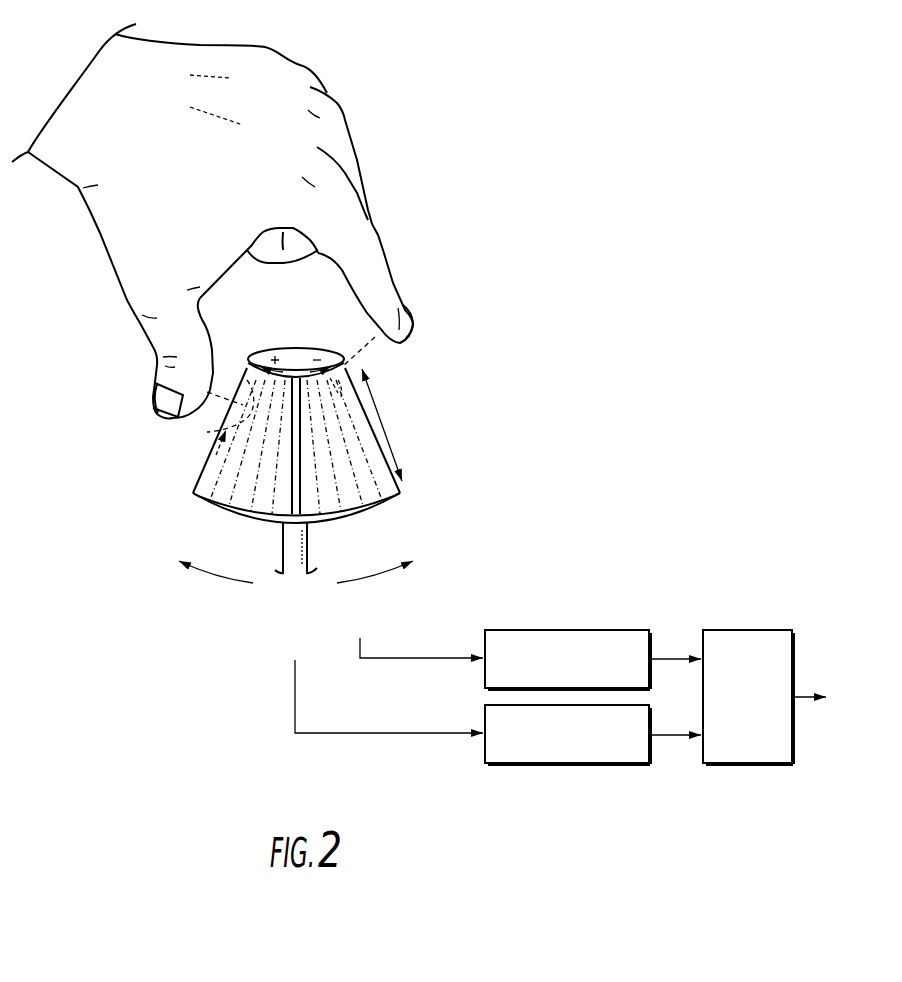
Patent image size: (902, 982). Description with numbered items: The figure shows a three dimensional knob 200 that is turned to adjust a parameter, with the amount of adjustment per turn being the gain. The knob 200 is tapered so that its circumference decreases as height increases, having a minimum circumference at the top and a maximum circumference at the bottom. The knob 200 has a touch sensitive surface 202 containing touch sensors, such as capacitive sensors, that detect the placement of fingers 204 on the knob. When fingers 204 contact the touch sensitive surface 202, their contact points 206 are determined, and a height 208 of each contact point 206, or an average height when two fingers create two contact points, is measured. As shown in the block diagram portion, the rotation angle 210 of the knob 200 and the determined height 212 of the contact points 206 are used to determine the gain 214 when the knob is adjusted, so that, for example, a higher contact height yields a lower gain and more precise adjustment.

The three dimensional knob 200 is at (331, 535).
The touch sensitive surface 202 is at (364, 437).
The fingers 204 is at (120, 218).
The contact points 206 is at (331, 395).
The height 208 is at (430, 470).
The rotation angle 210 is at (586, 675).
The determined height 212 is at (586, 750).
The gain 214 is at (764, 707).